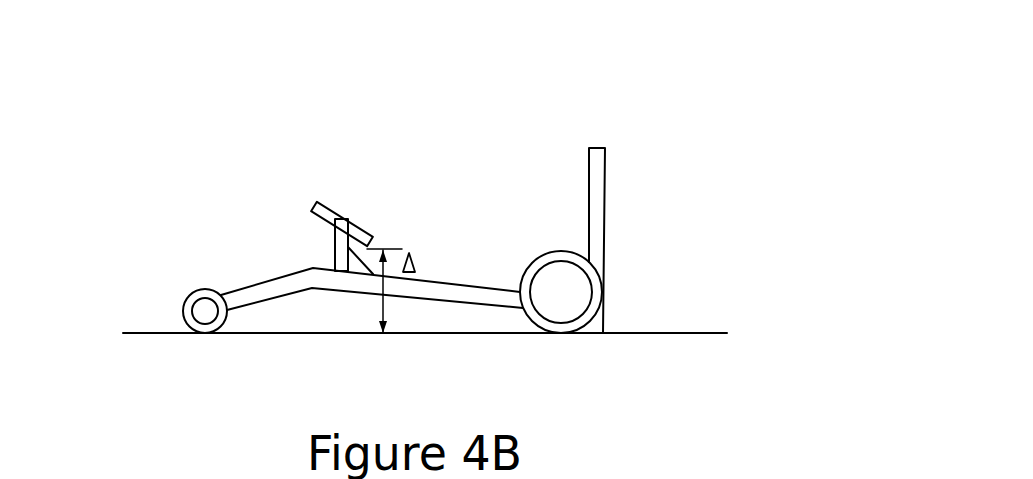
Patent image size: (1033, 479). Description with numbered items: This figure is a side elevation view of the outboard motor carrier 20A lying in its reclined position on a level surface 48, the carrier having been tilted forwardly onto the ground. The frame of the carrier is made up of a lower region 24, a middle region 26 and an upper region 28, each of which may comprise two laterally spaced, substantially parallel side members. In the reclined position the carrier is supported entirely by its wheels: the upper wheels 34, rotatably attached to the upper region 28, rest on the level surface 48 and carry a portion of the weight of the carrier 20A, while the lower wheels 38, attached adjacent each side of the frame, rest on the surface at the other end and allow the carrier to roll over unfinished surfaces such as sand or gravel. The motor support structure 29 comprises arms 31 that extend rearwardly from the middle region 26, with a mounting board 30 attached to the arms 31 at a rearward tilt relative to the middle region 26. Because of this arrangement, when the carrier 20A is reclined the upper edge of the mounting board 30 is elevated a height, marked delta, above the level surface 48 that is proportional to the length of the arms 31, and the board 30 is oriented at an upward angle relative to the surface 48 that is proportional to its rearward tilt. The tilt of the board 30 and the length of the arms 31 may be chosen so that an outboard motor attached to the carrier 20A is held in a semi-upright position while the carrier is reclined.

The outboard motor carrier 20A is at (592, 82).
The lower region 24 is at (605, 167).
The middle region 26 is at (438, 302).
The upper region 28 is at (253, 303).
The motor support structure 29 is at (298, 204).
The mounting board 30 is at (327, 208).
The arms 31 is at (335, 247).
The upper wheels 34 is at (170, 288).
The lower wheels 38 is at (548, 252).
The level surface 48 is at (652, 333).